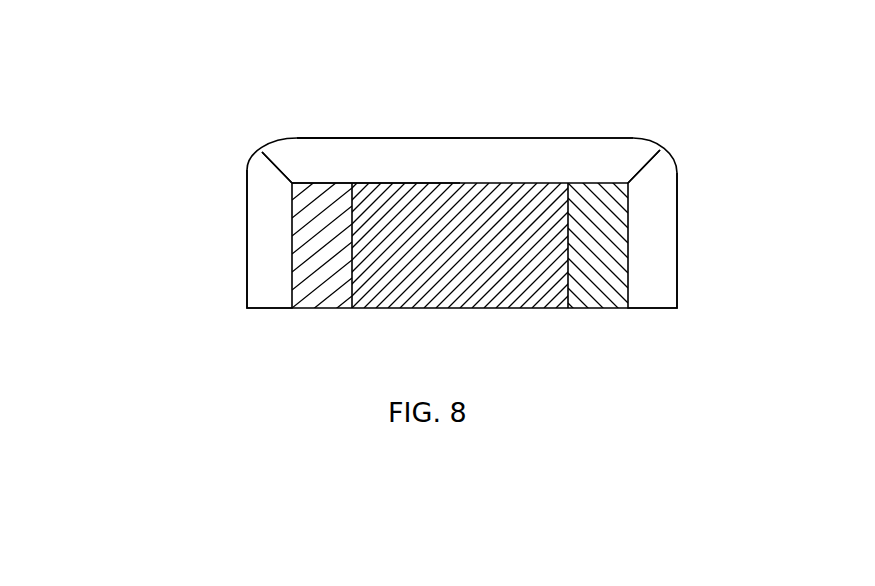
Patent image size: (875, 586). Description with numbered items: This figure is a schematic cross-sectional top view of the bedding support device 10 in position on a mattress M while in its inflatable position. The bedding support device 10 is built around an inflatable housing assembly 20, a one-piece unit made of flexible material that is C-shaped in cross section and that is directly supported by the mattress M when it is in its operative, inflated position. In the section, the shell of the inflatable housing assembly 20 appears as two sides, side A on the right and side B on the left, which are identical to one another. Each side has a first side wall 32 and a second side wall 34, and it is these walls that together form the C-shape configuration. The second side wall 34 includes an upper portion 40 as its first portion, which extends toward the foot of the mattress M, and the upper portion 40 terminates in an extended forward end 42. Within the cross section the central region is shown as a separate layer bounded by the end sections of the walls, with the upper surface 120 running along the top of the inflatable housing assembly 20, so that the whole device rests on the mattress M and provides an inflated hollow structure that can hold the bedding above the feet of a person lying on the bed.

The bedding support device 10 is at (656, 108).
The inflatable housing assembly 20 is at (418, 110).
The first side wall 32 is at (247, 167).
The second side wall 34 is at (293, 308).
The upper portion 40 is at (462, 165).
The extended forward end 42 is at (367, 165).
The top surface 120 is at (550, 137).
The side A of shell A is at (652, 228).
The side B of shell B is at (260, 268).
The mattress M is at (393, 288).